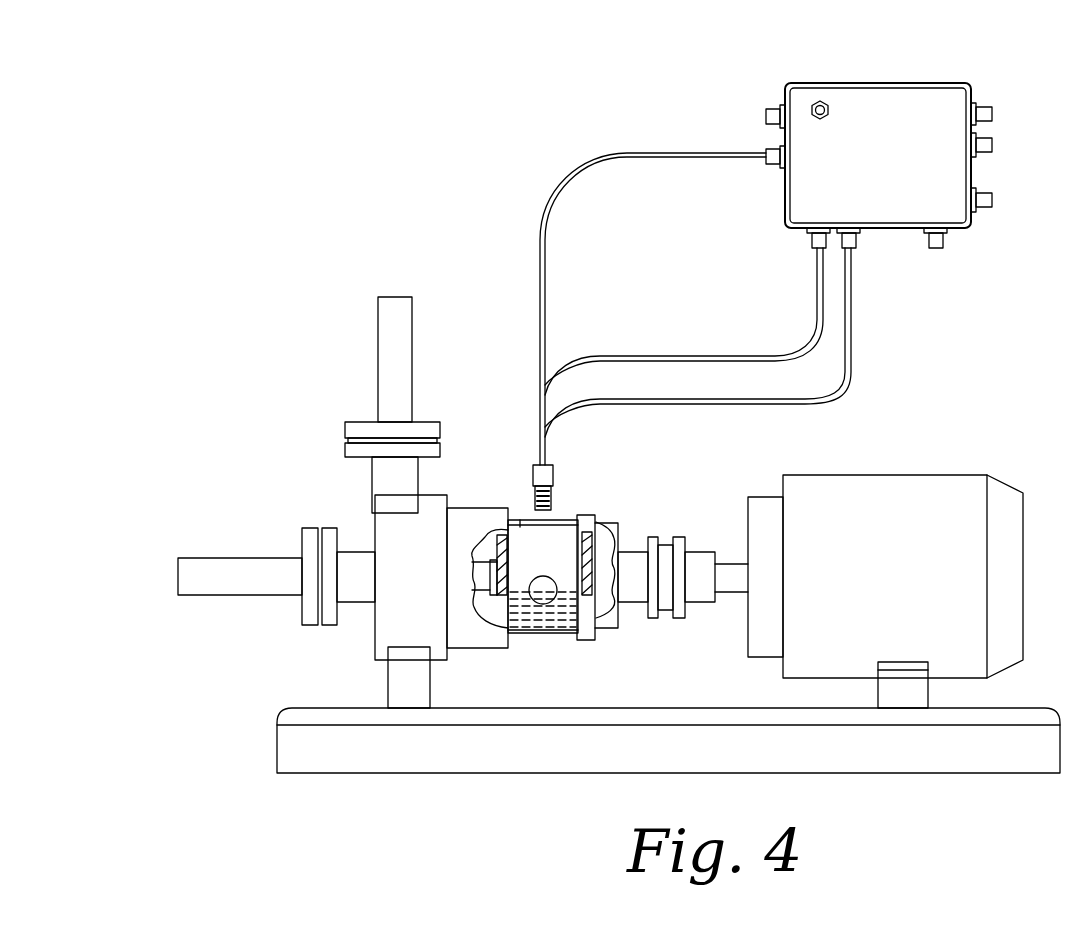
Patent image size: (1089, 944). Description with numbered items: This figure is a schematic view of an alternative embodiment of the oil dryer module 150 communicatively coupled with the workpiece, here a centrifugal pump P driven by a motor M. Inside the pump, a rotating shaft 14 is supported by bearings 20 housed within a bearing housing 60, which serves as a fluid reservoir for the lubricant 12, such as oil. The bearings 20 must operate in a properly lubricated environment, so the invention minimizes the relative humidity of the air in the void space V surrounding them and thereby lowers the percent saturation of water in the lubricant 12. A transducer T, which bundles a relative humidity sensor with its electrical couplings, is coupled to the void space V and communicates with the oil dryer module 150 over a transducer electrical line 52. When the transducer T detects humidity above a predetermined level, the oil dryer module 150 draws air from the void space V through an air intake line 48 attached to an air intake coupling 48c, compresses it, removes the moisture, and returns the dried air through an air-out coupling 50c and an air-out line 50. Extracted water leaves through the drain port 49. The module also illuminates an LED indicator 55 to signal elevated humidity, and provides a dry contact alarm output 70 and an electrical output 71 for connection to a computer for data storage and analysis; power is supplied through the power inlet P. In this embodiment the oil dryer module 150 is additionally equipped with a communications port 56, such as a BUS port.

The lubricant 12 is at (547, 622).
The shaft 14 is at (737, 594).
The bearings 20 is at (502, 530).
The air intake line 48 is at (702, 356).
The air intake coupling 48c is at (817, 247).
The drain port 49 is at (936, 250).
The air-out line 50 is at (805, 405).
The air-out coupling 50c is at (851, 250).
The transducer electrical line 52 is at (540, 327).
The LED indicator 55 is at (826, 106).
The communications port 56 is at (992, 145).
The bearing housing 60 is at (557, 540).
The dry contact alarm output 70 is at (992, 113).
The electrical output 71 is at (766, 116).
The oil dryer module 150 is at (795, 198).
The motor M is at (1027, 583).
The centrifugal pump P is at (992, 200).
The transducer T is at (552, 465).
The void space V is at (517, 520).